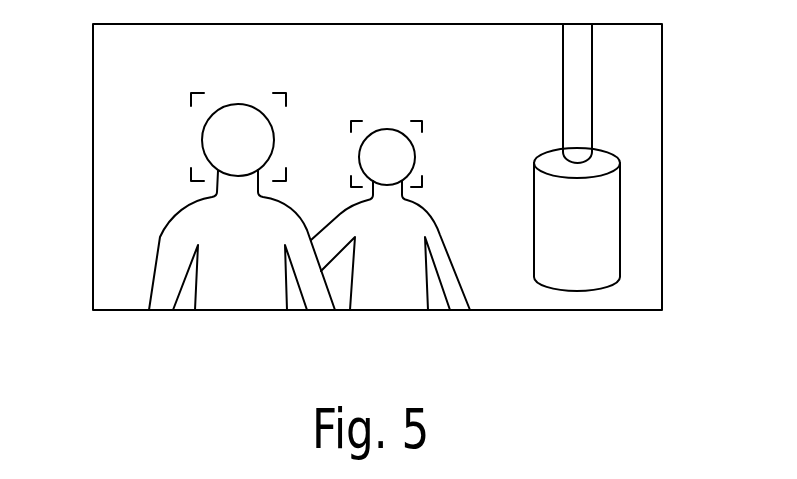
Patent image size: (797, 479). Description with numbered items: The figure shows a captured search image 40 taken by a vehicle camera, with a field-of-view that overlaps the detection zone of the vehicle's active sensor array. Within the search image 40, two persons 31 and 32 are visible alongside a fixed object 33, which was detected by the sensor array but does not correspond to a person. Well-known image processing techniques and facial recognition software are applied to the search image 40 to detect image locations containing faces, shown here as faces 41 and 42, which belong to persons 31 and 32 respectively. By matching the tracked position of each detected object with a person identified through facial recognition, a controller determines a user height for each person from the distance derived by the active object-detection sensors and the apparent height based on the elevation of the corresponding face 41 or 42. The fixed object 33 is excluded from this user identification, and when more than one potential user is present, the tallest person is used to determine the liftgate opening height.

The search image 40 is at (90, 110).
The face 41 is at (192, 92).
The face 42 is at (425, 122).
The person 31 is at (230, 293).
The person 32 is at (402, 290).
The fixed object 33 is at (603, 237).